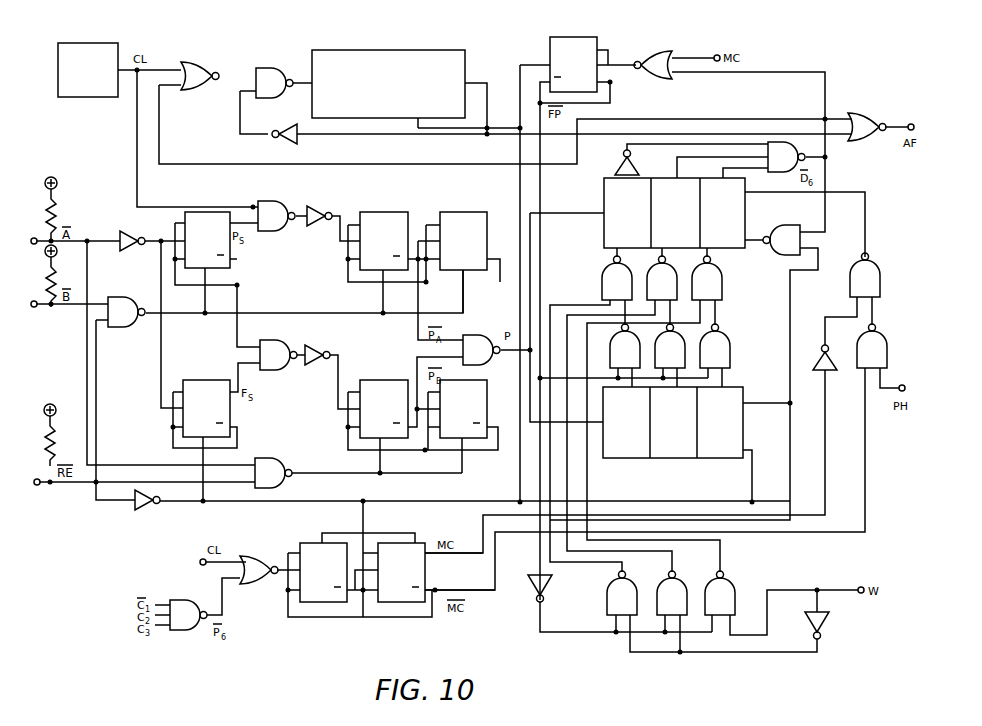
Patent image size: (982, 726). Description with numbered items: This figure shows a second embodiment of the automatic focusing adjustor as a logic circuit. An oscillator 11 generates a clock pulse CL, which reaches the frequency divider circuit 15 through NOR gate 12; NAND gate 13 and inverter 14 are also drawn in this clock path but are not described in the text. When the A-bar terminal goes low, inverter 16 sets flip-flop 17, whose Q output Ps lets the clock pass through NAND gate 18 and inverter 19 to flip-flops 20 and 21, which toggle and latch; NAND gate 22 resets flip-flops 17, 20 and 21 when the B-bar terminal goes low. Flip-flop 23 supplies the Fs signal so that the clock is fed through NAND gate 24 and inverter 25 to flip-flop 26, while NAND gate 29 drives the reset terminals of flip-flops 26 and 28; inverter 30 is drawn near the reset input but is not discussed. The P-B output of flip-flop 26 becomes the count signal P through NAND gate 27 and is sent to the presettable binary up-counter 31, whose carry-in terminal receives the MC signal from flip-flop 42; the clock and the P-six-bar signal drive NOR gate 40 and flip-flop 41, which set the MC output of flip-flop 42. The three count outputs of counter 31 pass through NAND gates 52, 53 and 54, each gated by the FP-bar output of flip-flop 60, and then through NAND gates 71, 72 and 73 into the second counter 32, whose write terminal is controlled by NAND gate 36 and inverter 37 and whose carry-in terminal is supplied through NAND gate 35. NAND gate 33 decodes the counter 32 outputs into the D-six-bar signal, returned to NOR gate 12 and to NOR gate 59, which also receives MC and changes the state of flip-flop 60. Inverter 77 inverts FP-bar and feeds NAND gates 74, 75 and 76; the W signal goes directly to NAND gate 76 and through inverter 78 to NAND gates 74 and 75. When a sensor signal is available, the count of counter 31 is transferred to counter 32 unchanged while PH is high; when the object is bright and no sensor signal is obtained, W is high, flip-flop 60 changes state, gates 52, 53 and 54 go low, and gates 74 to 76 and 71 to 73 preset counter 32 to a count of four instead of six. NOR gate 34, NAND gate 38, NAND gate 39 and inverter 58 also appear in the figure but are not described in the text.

The oscillator 11 is at (98, 48).
The NOR gate 12 is at (198, 66).
The NAND gate 13 is at (270, 68).
The inverter 14 is at (282, 137).
The frequency divider circuit 15 is at (399, 50).
The inverter 16 is at (127, 230).
The flip-flop 17 is at (208, 212).
The NAND gate 18 is at (282, 194).
The inverter 19 is at (318, 208).
The flip-flop 20 is at (393, 212).
The flip-flop 21 is at (470, 212).
The NAND gate 22 is at (124, 298).
The flip-flop 23 is at (214, 368).
The NAND gate 24 is at (268, 343).
The inverter 25 is at (317, 348).
The flip-flop 26 is at (396, 366).
The NAND gate 27 is at (478, 341).
The flip-flop 28 is at (484, 395).
The NAND gate 29 is at (276, 462).
The inverter 30 is at (143, 506).
The presettable binary up-counter 31 is at (743, 432).
The presettable binary up-counter 32 is at (604, 196).
The NAND gate 33 is at (783, 142).
The NOR gate 34 is at (866, 115).
The NAND gate 35 is at (791, 232).
The NAND gate 36 is at (880, 276).
The inverter 37 is at (818, 358).
The NAND gate 38 is at (884, 352).
The NAND gate 39 is at (178, 630).
The NOR gate 40 is at (258, 556).
The flip-flop 41 is at (316, 543).
The flip-flop 42 is at (412, 545).
The NAND gate 52 is at (612, 352).
The NAND gate 53 is at (680, 343).
The NAND gate 54 is at (733, 350).
The inverter 58 is at (616, 160).
The NOR gate 59 is at (662, 52).
The flip-flop 60 is at (584, 28).
The NAND gate 71 is at (602, 284).
The NAND gate 72 is at (652, 279).
The NAND gate 73 is at (722, 286).
The NAND gate 74 is at (612, 600).
The NAND gate 75 is at (662, 598).
The NAND gate 76 is at (710, 597).
The inverter 77 is at (544, 588).
The inverter 78 is at (826, 624).